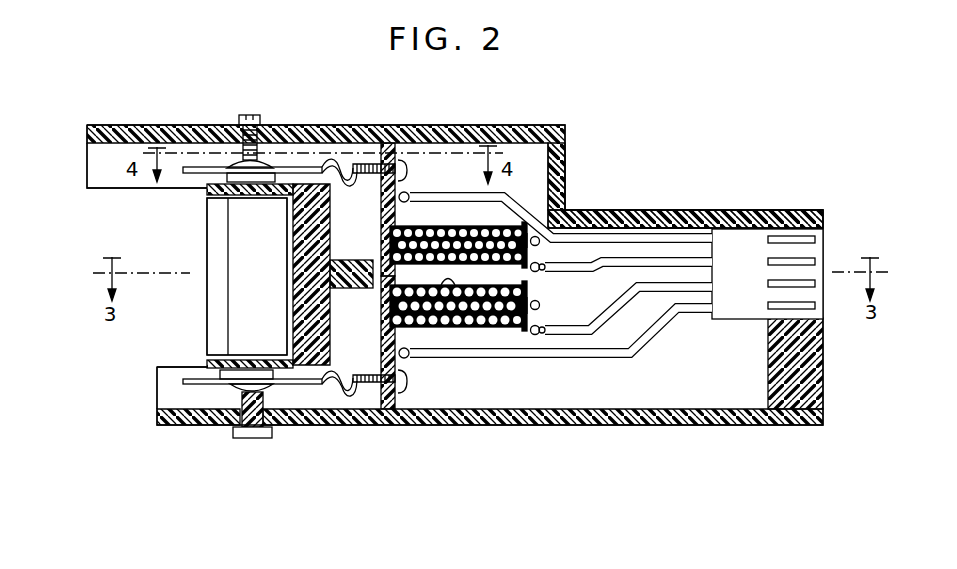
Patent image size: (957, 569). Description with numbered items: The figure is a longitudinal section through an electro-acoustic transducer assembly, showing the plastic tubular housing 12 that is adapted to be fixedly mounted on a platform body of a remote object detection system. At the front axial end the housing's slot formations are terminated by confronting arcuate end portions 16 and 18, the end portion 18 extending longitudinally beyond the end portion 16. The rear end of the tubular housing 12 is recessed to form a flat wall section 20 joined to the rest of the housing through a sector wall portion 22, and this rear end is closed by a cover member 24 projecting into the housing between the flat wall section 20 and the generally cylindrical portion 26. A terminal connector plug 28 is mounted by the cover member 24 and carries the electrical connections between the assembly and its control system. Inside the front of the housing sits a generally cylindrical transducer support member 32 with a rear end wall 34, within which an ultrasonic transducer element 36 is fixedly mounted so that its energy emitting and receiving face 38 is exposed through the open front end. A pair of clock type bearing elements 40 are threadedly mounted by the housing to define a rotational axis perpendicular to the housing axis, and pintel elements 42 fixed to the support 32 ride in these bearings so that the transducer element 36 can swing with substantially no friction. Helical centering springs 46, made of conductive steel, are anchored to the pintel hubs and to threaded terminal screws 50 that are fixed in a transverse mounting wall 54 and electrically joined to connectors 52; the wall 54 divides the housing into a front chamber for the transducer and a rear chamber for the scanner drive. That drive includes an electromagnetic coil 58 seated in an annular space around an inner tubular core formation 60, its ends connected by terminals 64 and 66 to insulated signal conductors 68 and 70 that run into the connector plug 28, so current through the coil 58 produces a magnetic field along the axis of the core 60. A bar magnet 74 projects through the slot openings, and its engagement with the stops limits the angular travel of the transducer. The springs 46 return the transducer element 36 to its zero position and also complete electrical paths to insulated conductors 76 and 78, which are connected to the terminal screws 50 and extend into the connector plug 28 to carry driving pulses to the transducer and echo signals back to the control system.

The tubular housing 12 is at (487, 118).
The arcuate end portion 16 is at (157, 421).
The arcuate end portion 18 is at (87, 130).
The flat wall section 20 is at (727, 210).
The sector wall portion 22 is at (560, 157).
The cover member 24 is at (803, 363).
The cylindrical portion 26 is at (666, 425).
The terminal connector plug 28 is at (748, 250).
The transducer support member 32 is at (215, 388).
The rear end wall 34 is at (298, 387).
The ultrasonic transducer element 36 is at (246, 298).
The energy emitting and receiving face 38 is at (207, 312).
The bearing elements 40 is at (250, 432).
The pintel elements 42 is at (267, 166).
The helical centering springs 46 is at (205, 167).
The terminal screws 50 is at (367, 390).
The connectors 52 is at (343, 392).
The transverse mounting wall 54 is at (385, 200).
The electromagnetic coil 58 is at (449, 225).
The inner tubular core formation 60 is at (457, 325).
The terminal 64 is at (552, 226).
The terminal 66 is at (545, 300).
The insulated signal conductor 68 is at (632, 260).
The insulated signal conductor 70 is at (630, 305).
The bar magnet 74 is at (352, 290).
The insulated electrical conductor 76 is at (669, 210).
The insulated electrical conductor 78 is at (597, 356).